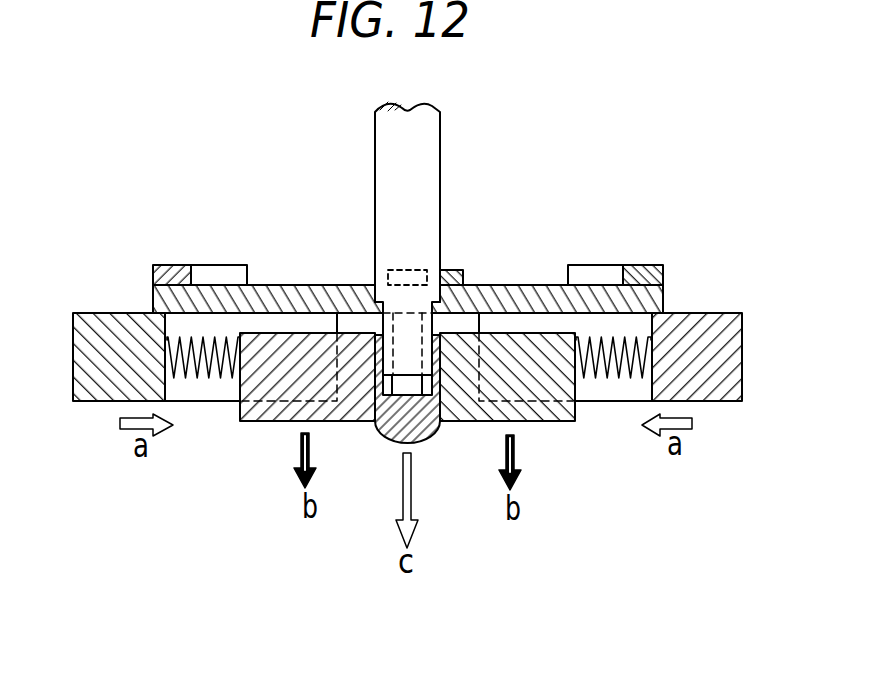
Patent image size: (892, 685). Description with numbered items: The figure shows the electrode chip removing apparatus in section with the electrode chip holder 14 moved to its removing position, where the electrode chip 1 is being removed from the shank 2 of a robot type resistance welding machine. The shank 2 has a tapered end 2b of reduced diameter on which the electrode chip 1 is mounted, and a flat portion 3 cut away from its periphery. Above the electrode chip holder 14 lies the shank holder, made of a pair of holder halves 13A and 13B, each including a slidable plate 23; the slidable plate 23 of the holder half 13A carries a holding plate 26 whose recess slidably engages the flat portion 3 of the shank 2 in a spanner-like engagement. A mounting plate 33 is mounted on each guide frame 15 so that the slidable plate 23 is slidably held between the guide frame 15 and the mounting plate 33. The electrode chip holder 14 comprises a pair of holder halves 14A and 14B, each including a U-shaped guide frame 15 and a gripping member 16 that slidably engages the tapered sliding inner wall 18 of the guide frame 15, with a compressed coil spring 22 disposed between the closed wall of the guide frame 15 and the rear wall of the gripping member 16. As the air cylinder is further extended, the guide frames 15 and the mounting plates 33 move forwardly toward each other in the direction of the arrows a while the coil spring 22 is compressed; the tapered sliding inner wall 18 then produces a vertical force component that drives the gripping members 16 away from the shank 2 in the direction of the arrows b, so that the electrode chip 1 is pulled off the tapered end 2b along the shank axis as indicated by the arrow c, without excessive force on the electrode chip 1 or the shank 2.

The electrode chip 1 is at (395, 443).
The shank 2 is at (373, 170).
The tapered end 2b is at (413, 393).
The flat portion 3 is at (402, 270).
The holder half 13A is at (692, 184).
The holder half 13B is at (235, 178).
The electrode chip holder 14 is at (760, 352).
The holder half 14A is at (708, 505).
The holder half 14B is at (187, 505).
The U-shaped guide frame 15 is at (268, 397).
The gripping member 16 is at (102, 400).
The sliding inner wall 18 is at (298, 323).
The compressed coil spring 22 is at (170, 342).
The slidable plate 23 is at (262, 285).
The holding plate 26 is at (453, 272).
The mounting plate 33 is at (170, 265).